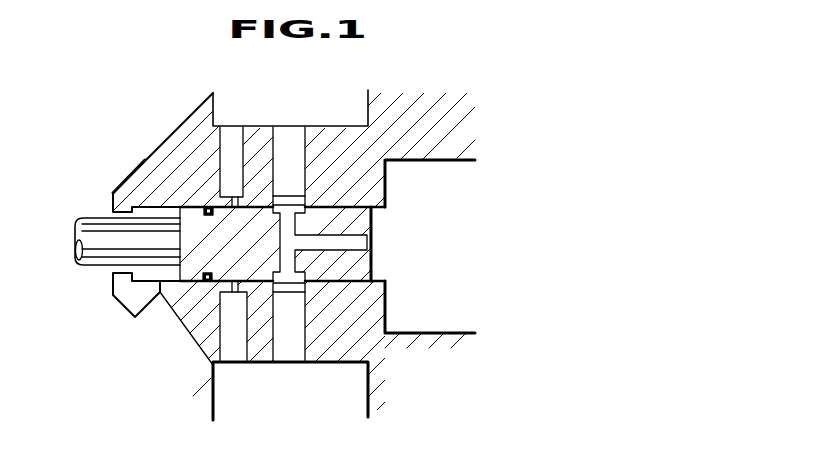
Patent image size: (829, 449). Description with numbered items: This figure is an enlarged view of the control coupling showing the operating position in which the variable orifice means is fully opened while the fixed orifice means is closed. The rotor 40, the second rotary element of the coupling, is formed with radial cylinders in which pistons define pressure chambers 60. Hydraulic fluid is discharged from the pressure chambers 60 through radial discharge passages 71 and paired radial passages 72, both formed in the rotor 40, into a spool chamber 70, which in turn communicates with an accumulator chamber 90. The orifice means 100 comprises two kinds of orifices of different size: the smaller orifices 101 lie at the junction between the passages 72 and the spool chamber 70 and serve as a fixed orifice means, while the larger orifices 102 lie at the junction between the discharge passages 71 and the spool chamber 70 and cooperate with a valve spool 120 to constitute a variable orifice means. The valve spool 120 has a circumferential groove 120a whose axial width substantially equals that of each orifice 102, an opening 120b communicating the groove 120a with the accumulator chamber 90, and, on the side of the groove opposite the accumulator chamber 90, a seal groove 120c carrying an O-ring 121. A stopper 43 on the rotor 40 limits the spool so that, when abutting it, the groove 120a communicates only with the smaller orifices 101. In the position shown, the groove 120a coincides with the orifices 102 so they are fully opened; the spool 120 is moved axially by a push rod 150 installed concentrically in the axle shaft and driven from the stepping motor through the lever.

The rotor 40 is at (358, 333).
The stopper 43 is at (118, 279).
The pressure chamber 60 is at (313, 418).
The spool chamber 70 is at (383, 272).
The radial discharge passage 71 is at (297, 338).
The radial passage 72 is at (236, 340).
The accumulator chamber 90 is at (434, 180).
The orifice means 100 is at (313, 181).
The orifice 101 is at (248, 198).
The orifice 102 is at (291, 195).
The valve spool 120 is at (360, 221).
The circumferential groove 120a is at (307, 208).
The opening 120b is at (373, 248).
The seal groove 120c is at (206, 284).
The O-ring 121 is at (207, 203).
The push rod 150 is at (93, 216).